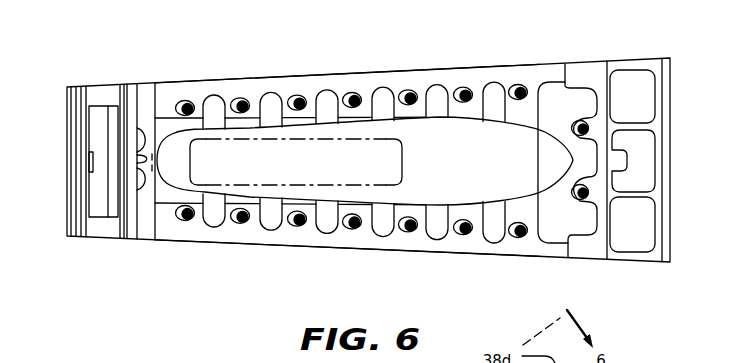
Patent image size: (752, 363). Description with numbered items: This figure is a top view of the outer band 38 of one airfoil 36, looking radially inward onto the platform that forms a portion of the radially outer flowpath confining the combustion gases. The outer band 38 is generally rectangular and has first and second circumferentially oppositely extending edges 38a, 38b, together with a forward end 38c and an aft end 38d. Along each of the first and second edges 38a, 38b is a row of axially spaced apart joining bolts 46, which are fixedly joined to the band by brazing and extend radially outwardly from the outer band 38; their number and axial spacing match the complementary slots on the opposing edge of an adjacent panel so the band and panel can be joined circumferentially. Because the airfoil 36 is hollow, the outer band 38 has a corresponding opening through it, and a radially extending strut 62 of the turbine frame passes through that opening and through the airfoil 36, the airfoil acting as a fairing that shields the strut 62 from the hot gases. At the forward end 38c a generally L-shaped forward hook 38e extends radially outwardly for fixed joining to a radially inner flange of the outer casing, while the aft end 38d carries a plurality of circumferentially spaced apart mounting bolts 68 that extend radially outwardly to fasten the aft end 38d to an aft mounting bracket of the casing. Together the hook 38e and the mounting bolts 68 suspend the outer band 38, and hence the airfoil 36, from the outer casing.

The outer band 38 is at (206, 70).
The first edge of outer band 38a is at (393, 250).
The second edge of outer band 38b is at (337, 75).
The forward end of outer band 38c is at (108, 237).
The aft end of outer band 38d is at (623, 260).
The forward hook 38e is at (132, 88).
The airfoil 36 is at (168, 187).
The joining bolt 46 is at (297, 95).
The strut 62 is at (255, 190).
The mounting bolt 68 is at (574, 195).